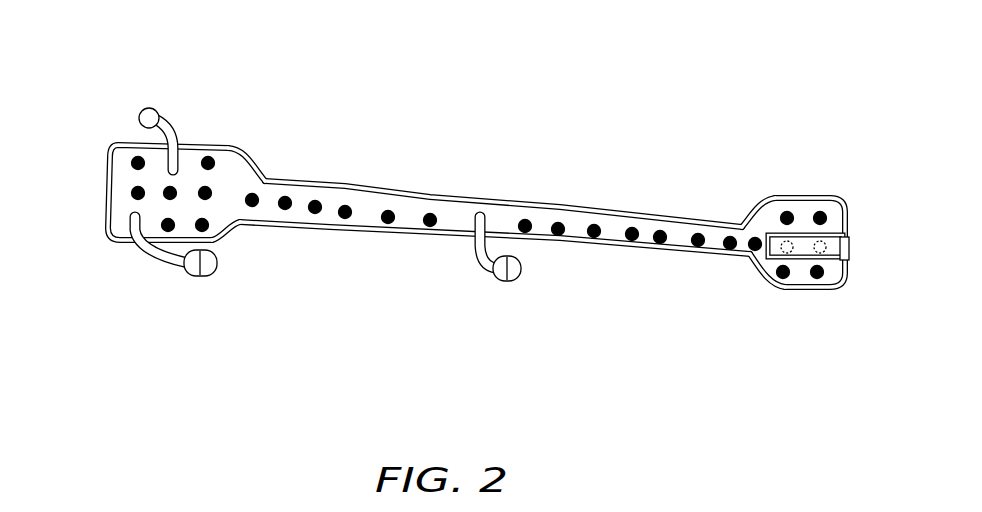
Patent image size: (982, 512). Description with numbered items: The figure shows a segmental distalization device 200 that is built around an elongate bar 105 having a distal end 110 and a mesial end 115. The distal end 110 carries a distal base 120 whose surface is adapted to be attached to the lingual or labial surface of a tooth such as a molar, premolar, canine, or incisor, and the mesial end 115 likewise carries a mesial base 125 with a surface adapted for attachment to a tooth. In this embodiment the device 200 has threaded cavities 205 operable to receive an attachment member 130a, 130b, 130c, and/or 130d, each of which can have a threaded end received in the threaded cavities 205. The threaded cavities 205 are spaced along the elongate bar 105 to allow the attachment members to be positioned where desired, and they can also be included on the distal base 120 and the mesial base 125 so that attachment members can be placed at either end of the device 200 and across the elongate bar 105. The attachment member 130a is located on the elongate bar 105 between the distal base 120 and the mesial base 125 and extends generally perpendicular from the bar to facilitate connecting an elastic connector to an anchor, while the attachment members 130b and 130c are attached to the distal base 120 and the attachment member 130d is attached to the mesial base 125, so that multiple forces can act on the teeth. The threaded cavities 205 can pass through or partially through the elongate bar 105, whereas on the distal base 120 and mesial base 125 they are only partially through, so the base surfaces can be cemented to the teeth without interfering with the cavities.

The segmental distalization device 200 is at (570, 111).
The elongate bar 105 is at (465, 210).
The distal end 110 is at (272, 183).
The mesial end 115 is at (742, 231).
The distal base 120 is at (120, 168).
The mesial base 125 is at (793, 275).
The threaded cavities 205 is at (383, 231).
The attachment member 130a is at (496, 284).
The attachment member 130b is at (184, 280).
The attachment member 130c is at (157, 104).
The attachment member 130d is at (837, 231).